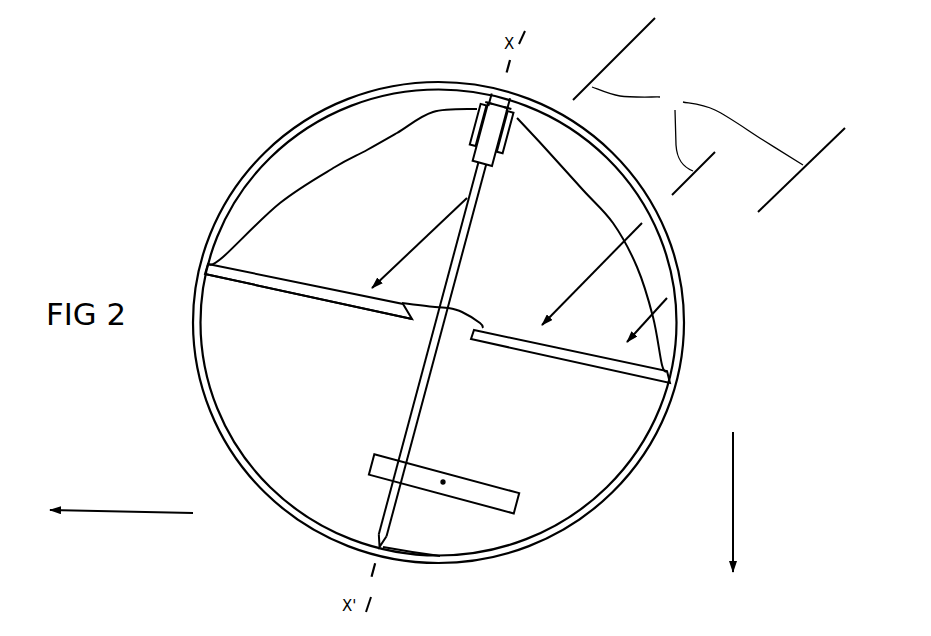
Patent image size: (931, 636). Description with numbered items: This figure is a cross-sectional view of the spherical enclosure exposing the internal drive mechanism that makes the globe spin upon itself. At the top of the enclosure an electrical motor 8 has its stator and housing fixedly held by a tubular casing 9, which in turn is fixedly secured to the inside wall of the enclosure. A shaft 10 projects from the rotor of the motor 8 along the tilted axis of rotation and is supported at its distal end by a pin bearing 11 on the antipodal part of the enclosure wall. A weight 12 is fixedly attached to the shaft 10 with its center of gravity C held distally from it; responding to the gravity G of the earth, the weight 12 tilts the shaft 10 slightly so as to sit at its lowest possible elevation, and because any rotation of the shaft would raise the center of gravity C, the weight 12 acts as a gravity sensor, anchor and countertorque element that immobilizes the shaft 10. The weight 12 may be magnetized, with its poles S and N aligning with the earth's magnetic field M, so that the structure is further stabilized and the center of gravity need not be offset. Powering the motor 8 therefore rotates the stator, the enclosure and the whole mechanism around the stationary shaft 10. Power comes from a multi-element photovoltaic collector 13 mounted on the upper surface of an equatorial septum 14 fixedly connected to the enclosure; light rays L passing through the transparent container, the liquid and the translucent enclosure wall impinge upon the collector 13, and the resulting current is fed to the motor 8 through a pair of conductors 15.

The electrical motor 8 is at (495, 162).
The tubular casing 9 is at (477, 135).
The shaft 10 is at (412, 408).
The pin bearing 11 is at (380, 543).
The weight 12 is at (497, 481).
The photovoltaic collector 13 is at (303, 276).
The equatorial septum 14 is at (333, 306).
The conductors 15 is at (335, 168).
The center of gravity C is at (443, 480).
The south pole S is at (356, 462).
The north pole N is at (533, 506).
The magnetic direction M is at (124, 521).
The gravity G is at (733, 489).
The light rays L is at (709, 115).